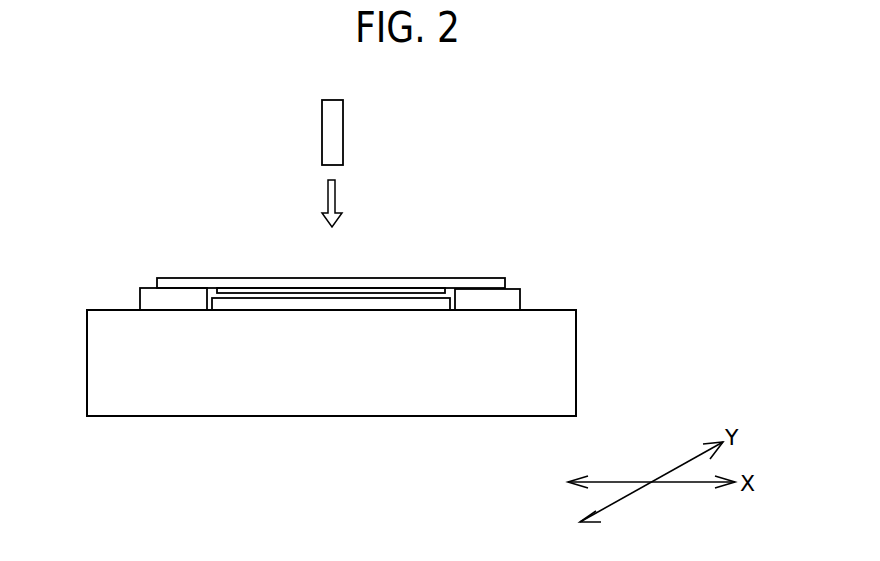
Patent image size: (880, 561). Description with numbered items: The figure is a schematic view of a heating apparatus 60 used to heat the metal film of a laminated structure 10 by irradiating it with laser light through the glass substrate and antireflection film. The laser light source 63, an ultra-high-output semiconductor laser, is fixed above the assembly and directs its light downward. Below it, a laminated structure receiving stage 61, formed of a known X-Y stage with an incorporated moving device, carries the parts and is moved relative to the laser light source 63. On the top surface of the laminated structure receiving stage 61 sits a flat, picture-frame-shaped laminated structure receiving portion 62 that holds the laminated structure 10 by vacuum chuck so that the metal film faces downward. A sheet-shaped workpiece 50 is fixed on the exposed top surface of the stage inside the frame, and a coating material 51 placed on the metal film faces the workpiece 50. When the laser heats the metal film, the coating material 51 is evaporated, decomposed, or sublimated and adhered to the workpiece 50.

The laminated structure 10 is at (403, 285).
The workpiece 50 is at (337, 305).
The coating material 51 is at (252, 293).
The heating apparatus 60 is at (449, 147).
The laminated structure receiving stage 61 is at (227, 393).
The laminated structure receiving portion 62 is at (513, 300).
The laser light source 63 is at (333, 118).